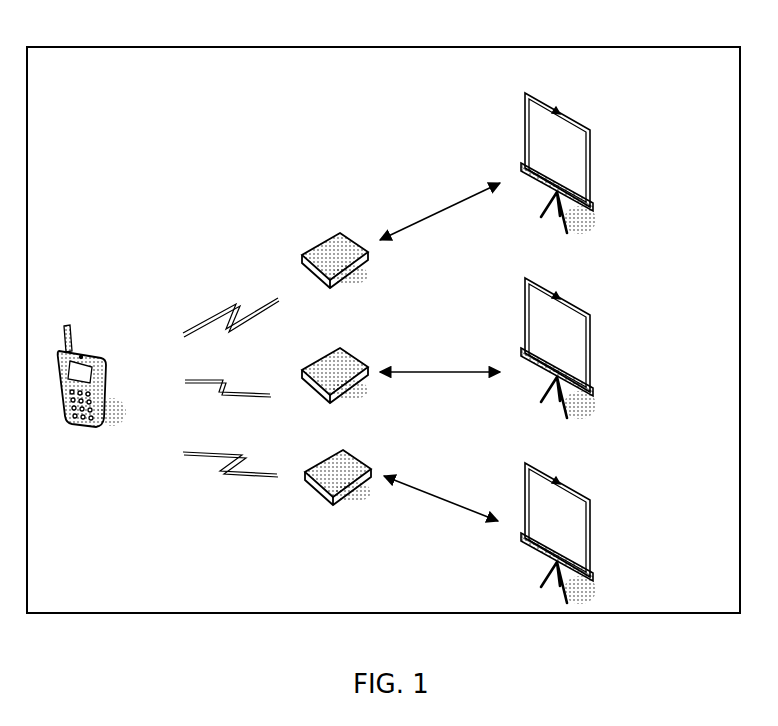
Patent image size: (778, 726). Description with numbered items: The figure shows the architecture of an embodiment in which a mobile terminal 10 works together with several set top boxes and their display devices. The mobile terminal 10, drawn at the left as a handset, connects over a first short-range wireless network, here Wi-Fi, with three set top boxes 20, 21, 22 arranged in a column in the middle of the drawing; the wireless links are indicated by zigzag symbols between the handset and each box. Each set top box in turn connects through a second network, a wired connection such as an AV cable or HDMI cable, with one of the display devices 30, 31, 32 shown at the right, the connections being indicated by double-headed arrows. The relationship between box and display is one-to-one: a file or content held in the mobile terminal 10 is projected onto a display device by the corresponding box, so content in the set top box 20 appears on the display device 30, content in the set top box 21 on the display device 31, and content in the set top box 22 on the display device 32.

The mobile terminal 10 is at (70, 312).
The set top box 20 is at (322, 232).
The set top box 21 is at (337, 337).
The set top box 22 is at (337, 442).
The display device 30 is at (568, 98).
The display device 31 is at (568, 283).
The display device 32 is at (568, 468).